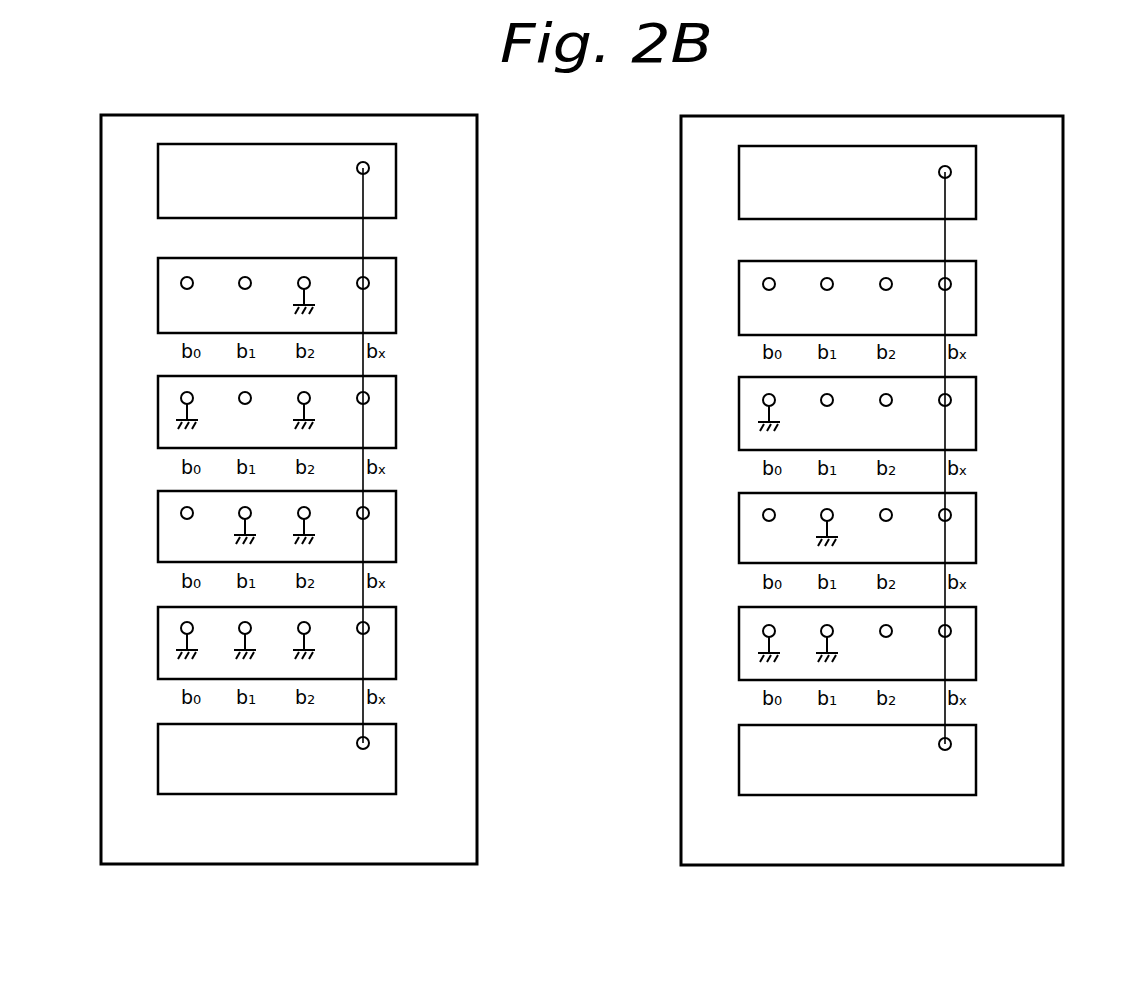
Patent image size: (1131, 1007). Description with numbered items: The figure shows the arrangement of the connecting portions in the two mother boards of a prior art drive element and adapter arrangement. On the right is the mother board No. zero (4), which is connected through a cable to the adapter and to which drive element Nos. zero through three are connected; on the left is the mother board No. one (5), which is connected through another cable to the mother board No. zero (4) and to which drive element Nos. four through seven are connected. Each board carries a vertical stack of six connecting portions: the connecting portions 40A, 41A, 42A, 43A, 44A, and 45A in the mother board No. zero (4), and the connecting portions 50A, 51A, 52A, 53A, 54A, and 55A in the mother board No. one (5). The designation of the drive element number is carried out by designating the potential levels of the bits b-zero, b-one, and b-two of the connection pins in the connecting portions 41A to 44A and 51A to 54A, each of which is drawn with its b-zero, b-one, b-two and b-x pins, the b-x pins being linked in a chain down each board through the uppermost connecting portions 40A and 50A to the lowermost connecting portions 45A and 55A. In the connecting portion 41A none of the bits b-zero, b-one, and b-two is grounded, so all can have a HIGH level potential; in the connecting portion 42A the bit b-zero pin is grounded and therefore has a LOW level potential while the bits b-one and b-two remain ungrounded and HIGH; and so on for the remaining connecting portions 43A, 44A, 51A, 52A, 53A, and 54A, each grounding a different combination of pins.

The mother board No. 0 4 is at (1064, 152).
The mother board No. 1 5 is at (478, 151).
The connecting portion 40A is at (976, 210).
The connecting portion 41A is at (976, 326).
The connecting portion 42A is at (976, 441).
The connecting portion 43A is at (976, 554).
The connecting portion 44A is at (976, 671).
The connecting portion 45A is at (976, 786).
The connecting portion 50A is at (396, 211).
The connecting portion 51A is at (396, 325).
The connecting portion 52A is at (396, 440).
The connecting portion 53A is at (396, 554).
The connecting portion 54A is at (396, 670).
The connecting portion 55A is at (396, 785).